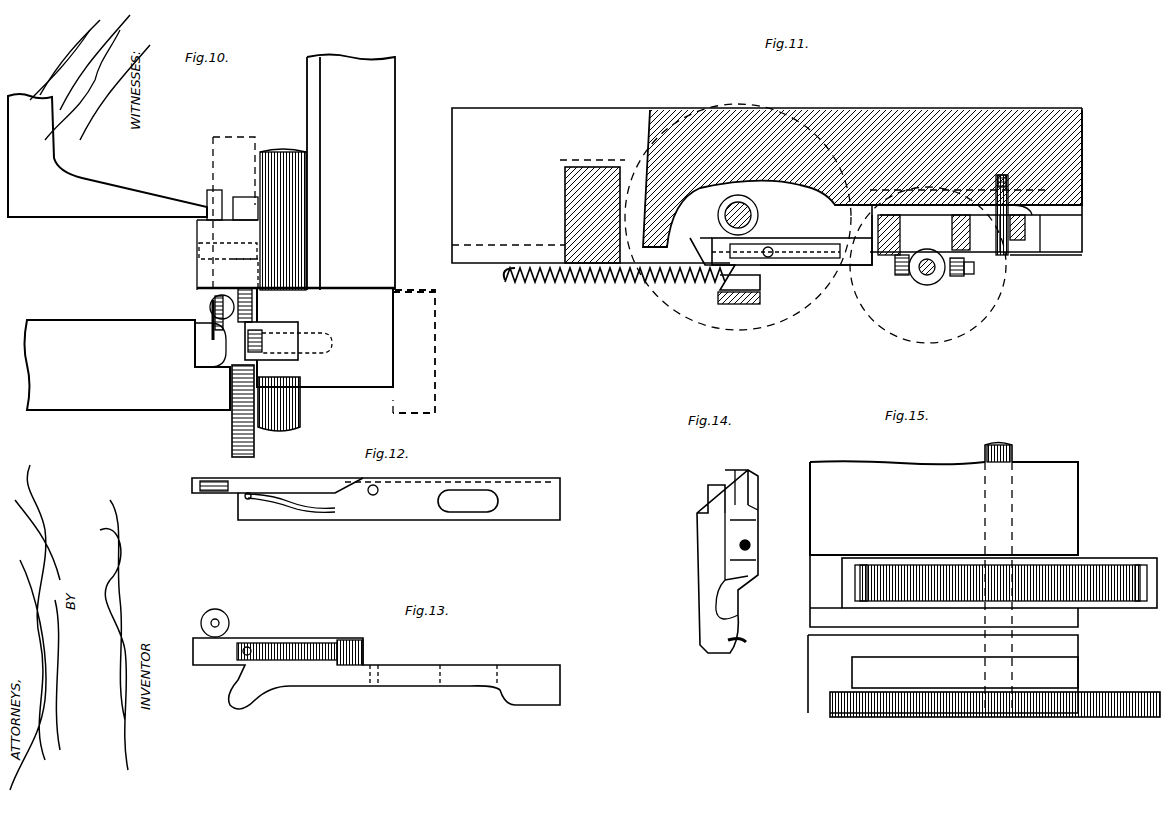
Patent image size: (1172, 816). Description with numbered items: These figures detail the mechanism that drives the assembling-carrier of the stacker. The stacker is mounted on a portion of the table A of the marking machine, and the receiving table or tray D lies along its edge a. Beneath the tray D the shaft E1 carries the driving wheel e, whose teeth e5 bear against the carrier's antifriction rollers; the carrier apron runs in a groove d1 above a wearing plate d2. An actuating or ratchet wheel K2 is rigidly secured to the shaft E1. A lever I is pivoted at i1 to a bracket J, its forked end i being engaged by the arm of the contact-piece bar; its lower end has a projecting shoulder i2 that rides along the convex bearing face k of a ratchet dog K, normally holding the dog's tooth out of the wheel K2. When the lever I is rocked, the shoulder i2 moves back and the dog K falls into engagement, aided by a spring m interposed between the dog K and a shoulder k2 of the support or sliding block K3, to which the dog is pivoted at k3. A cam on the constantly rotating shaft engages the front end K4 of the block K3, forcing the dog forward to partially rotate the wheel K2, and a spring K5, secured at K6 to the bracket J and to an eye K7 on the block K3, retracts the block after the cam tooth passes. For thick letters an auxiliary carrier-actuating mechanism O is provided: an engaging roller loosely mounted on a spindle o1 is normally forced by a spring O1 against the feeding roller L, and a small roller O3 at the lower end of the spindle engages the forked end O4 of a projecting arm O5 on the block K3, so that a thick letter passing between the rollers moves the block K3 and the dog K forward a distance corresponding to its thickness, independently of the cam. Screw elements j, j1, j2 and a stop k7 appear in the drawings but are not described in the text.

In FIG. 10, the ratchet wheel K2 is at (100, 196).
In FIG. 10, the spindle o1 is at (236, 140).
In FIG. 10, the forked end of lever i is at (209, 196).
In FIG. 14, the forked end of lever i is at (752, 490).
In FIG. 10, the lever I is at (290, 213).
In FIG. 11, the lever I is at (750, 215).
In FIG. 14, the lever I is at (700, 535).
In FIG. 10, the pivot i1 is at (198, 252).
In FIG. 11, the pivot i1 is at (705, 235).
In FIG. 14, the pivot i1 is at (752, 543).
In FIG. 11, the projecting shoulder i2 is at (718, 222).
In FIG. 14, the projecting shoulder i2 is at (744, 640).
In FIG. 10, the forked end O4 is at (252, 272).
In FIG. 11, the forked end O4 is at (970, 276).
In FIG. 10, the table A is at (440, 356).
In FIG. 10, the edge of table a is at (393, 405).
In FIG. 10, the bracket J is at (376, 346).
In FIG. 11, the bracket J is at (1007, 110).
In FIG. 10, the screw j is at (296, 365).
In FIG. 11, the screw j is at (1080, 190).
In FIG. 10, the screw head j1 is at (264, 338).
In FIG. 11, the screw head j1 is at (1026, 222).
In FIG. 10, the screw shank j2 is at (300, 355).
In FIG. 11, the screw shank j2 is at (1082, 200).
In FIG. 10, the ratchet dog K is at (210, 340).
In FIG. 11, the ratchet dog K is at (783, 270).
In FIG. 15, the ratchet dog K is at (985, 716).
In FIG. 10, the support or sliding block K3 is at (298, 332).
In FIG. 11, the support or sliding block K3 is at (1045, 248).
In FIG. 12, the support or sliding block K3 is at (405, 512).
In FIG. 13, the support or sliding block K3 is at (398, 680).
In FIG. 10, the bearing face k is at (210, 352).
In FIG. 10, the shoulder of support k2 is at (232, 436).
In FIG. 11, the shoulder of support k2 is at (840, 268).
In FIG. 12, the shoulder of support k2 is at (292, 492).
In FIG. 13, the shoulder of support k2 is at (270, 643).
In FIG. 11, the dog pivot k3 is at (887, 275).
In FIG. 12, the dog pivot k3 is at (371, 496).
In FIG. 11, the stop k7 is at (758, 296).
In FIG. 11, the front end of support K4 is at (755, 212).
In FIG. 12, the front end of support K4 is at (238, 505).
In FIG. 13, the front end of support K4 is at (238, 678).
In FIG. 10, the spring K5 is at (215, 305).
In FIG. 11, the spring K5 is at (600, 284).
In FIG. 11, the spring attachment K6 is at (512, 278).
In FIG. 12, the eye K7 is at (215, 483).
In FIG. 13, the eye K7 is at (220, 614).
In FIG. 10, the table or tray D is at (128, 365).
In FIG. 15, the table or tray D is at (943, 587).
In FIG. 11, the auxiliary carrier-actuating mechanism O is at (995, 308).
In FIG. 11, the spring O1 is at (924, 282).
In FIG. 10, the small roller O3 is at (253, 304).
In FIG. 11, the small roller O3 is at (955, 278).
In FIG. 10, the projecting arm O5 is at (212, 322).
In FIG. 11, the projecting arm O5 is at (900, 276).
In FIG. 11, the feeding roller L is at (680, 312).
In FIG. 11, the spring m is at (820, 252).
In FIG. 12, the spring m is at (312, 512).
In FIG. 13, the spring m is at (308, 650).
In FIG. 15, the shaft E1 is at (1014, 452).
In FIG. 15, the driving wheel e is at (1095, 565).
In FIG. 15, the teeth of drivers e5 is at (868, 568).
In FIG. 15, the groove d1 is at (824, 562).
In FIG. 15, the wearing plate d2 is at (818, 572).